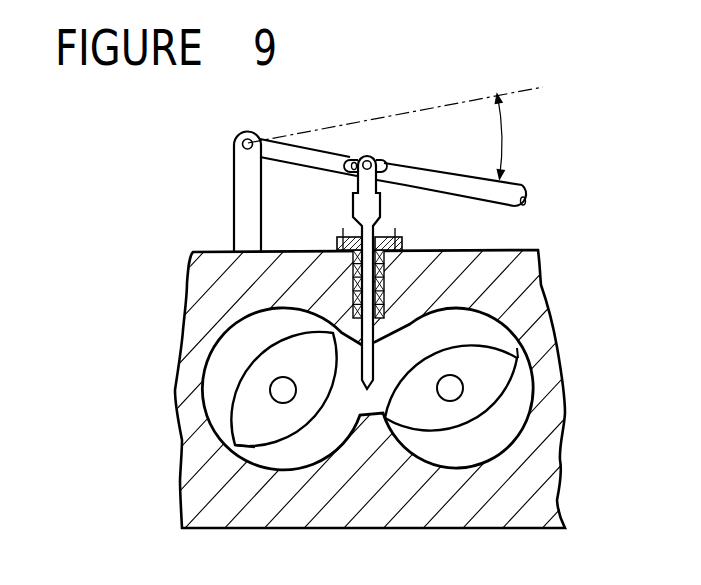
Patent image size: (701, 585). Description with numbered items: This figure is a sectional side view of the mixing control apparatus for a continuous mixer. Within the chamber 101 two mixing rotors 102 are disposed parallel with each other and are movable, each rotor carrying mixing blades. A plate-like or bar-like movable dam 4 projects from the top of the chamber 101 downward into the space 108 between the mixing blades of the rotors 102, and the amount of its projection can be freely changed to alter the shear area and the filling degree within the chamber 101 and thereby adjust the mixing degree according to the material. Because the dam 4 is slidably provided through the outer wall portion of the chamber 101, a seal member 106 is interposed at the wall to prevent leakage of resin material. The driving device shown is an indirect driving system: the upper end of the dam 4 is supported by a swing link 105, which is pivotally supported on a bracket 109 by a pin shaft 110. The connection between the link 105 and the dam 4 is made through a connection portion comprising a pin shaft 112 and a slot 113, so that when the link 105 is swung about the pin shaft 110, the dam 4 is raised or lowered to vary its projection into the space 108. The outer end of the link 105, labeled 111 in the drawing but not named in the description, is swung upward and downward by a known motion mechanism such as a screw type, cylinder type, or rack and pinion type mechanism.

The chamber 101 is at (317, 528).
The mixing rotors 102 is at (252, 443).
The movable dam 4 is at (331, 346).
The swing link 105 is at (322, 150).
The seal member 106 is at (394, 272).
The space 108 is at (373, 362).
The bracket 109 is at (240, 213).
The pin shaft 110 is at (247, 131).
The handle end 111 is at (468, 187).
The pin shaft 112 is at (369, 157).
The slot 113 is at (383, 165).